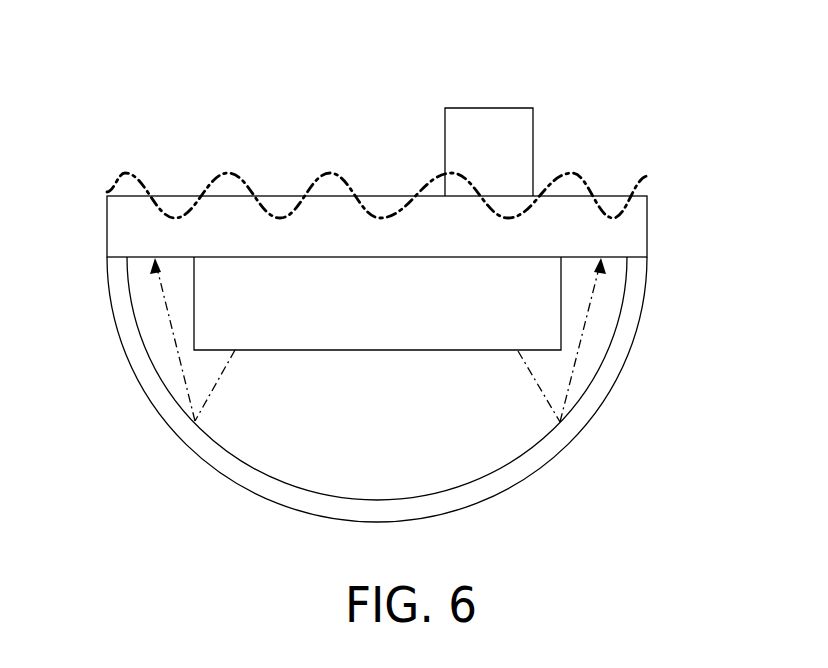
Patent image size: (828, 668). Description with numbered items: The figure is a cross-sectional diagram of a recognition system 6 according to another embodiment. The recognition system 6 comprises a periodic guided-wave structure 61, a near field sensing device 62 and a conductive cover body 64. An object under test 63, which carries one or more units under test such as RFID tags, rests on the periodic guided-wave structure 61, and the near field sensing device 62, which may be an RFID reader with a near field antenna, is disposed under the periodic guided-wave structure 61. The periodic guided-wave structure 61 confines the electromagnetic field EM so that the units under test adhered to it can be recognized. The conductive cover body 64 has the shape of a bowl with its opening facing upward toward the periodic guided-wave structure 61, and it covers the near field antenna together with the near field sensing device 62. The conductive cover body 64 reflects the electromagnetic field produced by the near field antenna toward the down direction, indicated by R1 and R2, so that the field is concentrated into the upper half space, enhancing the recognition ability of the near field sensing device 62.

The recognition system 6 is at (619, 40).
The periodic guided-wave structure 61 is at (640, 233).
The near field sensing device 62 is at (383, 312).
The object under test 63 is at (515, 150).
The conductive cover body 64 is at (585, 407).
The downward electromagnetic field direction R1 is at (175, 337).
The downward electromagnetic field direction R2 is at (620, 333).
The electromagnetic field EM is at (342, 160).